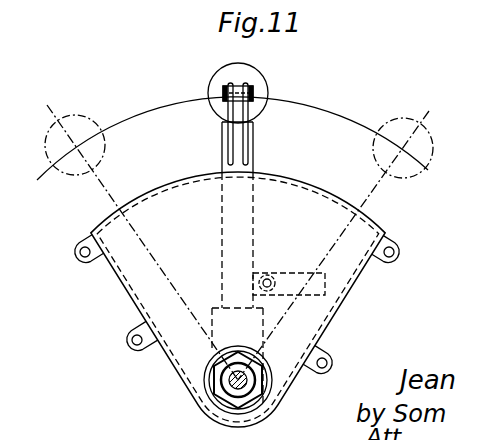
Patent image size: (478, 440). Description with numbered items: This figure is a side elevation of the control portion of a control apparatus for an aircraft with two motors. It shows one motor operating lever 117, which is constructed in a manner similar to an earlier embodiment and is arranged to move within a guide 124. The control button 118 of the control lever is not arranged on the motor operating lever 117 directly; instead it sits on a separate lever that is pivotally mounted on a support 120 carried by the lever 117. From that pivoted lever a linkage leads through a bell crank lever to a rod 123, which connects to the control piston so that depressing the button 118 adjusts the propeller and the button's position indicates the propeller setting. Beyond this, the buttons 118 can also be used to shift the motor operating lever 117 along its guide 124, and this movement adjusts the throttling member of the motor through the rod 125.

The motor operating lever 117 is at (253, 217).
The control button 118 is at (261, 82).
The support 120 is at (245, 147).
The rod 123 is at (217, 389).
The guide 124 is at (167, 192).
The rod 125 is at (300, 268).